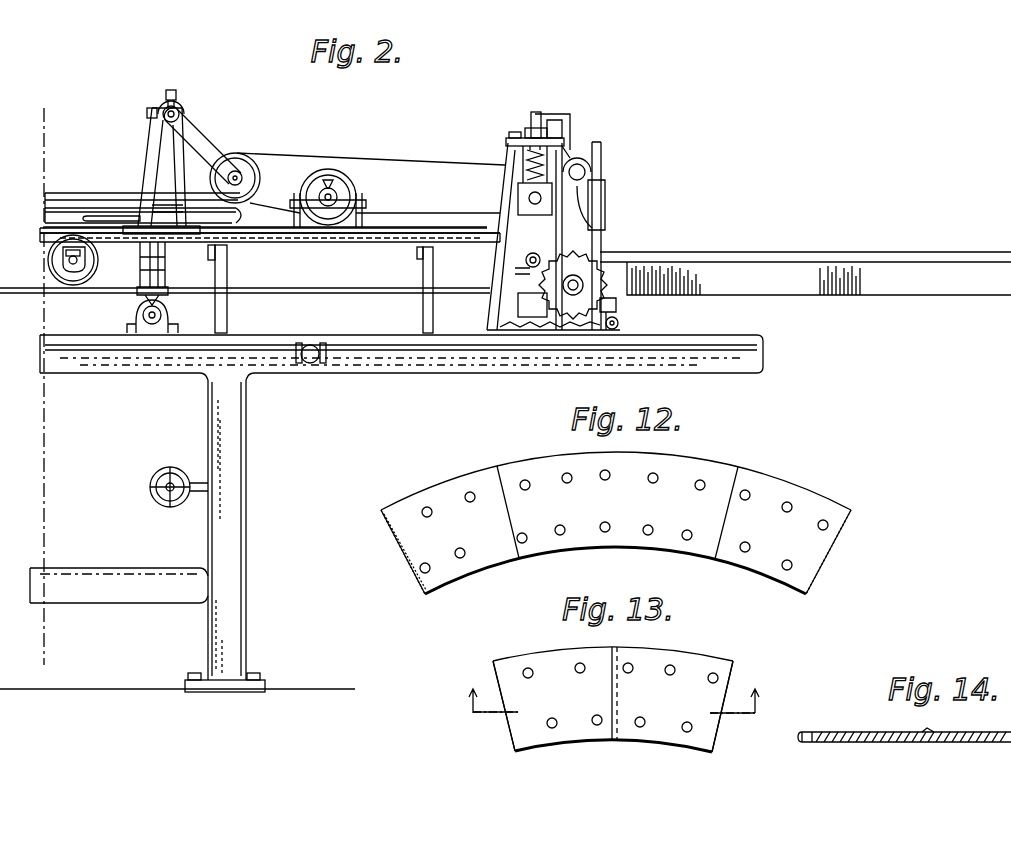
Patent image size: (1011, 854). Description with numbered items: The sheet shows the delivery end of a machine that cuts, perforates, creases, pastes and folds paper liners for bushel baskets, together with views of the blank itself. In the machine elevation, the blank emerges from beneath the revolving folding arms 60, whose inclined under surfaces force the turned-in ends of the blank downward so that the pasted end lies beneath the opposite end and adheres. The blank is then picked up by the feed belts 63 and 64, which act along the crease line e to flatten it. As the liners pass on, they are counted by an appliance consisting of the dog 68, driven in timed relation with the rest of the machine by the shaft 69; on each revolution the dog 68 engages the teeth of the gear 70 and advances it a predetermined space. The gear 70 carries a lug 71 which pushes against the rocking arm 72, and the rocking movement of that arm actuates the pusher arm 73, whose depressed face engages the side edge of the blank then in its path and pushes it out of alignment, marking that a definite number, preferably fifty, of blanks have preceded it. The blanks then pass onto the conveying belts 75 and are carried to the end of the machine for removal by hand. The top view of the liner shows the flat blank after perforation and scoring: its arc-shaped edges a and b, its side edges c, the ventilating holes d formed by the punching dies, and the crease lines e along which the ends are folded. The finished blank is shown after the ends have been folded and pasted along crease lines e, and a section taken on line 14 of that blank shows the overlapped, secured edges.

In FIG. 2, the folding arms 60 is at (100, 216).
In FIG. 2, the feed belt 63 is at (270, 253).
In FIG. 2, the feed belt 64 is at (386, 241).
In FIG. 2, the dog 68 is at (525, 271).
In FIG. 2, the shaft 69 is at (529, 255).
In FIG. 2, the gear 70 is at (602, 277).
In FIG. 2, the lug 71 is at (617, 305).
In FIG. 2, the rocking arm 72 is at (602, 204).
In FIG. 2, the pusher arm 73 is at (592, 190).
In FIG. 2, the conveying belts 75 is at (828, 258).
In FIG. 12, the edge of the blank a is at (645, 548).
In FIG. 12, the edge of the blank b is at (690, 457).
In FIG. 12, the side edges of the blank c is at (400, 562).
In FIG. 14, the side edges of the blank c is at (932, 731).
In FIG. 12, the ventilating holes d is at (790, 504).
In FIG. 12, the crease lines e is at (497, 466).
In FIG. 13, the crease lines e is at (493, 666).
In FIG. 14, the crease lines e is at (807, 740).
In FIG. 13, the section line 14 is at (617, 705).